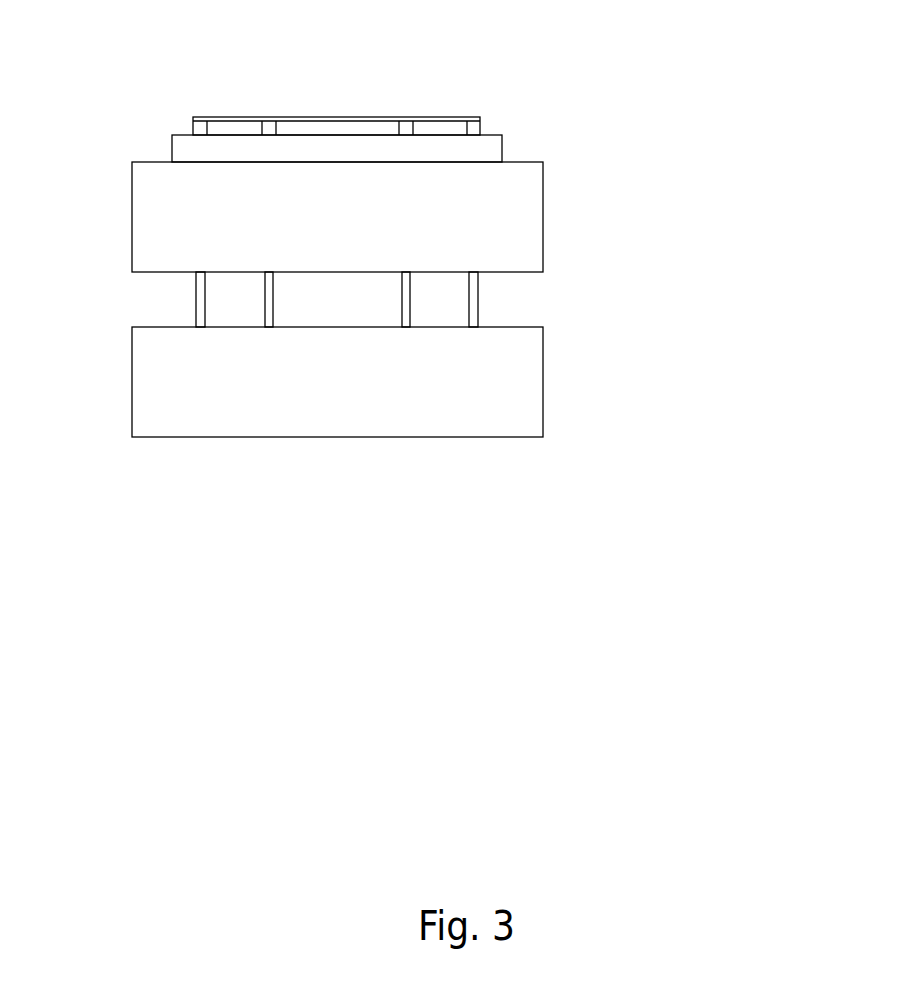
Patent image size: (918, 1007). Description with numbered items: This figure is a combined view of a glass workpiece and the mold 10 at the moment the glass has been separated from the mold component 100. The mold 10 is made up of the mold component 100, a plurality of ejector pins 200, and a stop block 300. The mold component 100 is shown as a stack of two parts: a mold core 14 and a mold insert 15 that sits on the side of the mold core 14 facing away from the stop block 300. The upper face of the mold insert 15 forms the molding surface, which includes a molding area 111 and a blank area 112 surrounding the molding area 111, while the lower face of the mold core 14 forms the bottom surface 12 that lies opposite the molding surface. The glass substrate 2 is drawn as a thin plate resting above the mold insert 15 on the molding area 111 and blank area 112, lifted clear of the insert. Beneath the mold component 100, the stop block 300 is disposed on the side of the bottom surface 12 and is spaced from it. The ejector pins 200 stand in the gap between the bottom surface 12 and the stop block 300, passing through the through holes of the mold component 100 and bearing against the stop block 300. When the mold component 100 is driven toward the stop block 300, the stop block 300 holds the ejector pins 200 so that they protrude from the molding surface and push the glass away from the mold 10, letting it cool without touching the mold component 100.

The glass substrate 2 is at (334, 80).
The molding area 111 is at (248, 134).
The blank area 112 is at (185, 135).
The mold insert 15 is at (482, 148).
The mold core 14 is at (502, 219).
The mold component 100 is at (438, 188).
The bottom surface 12 is at (165, 272).
The ejector pins 200 is at (473, 312).
The stop block 300 is at (473, 412).
The mold 10 is at (448, 271).